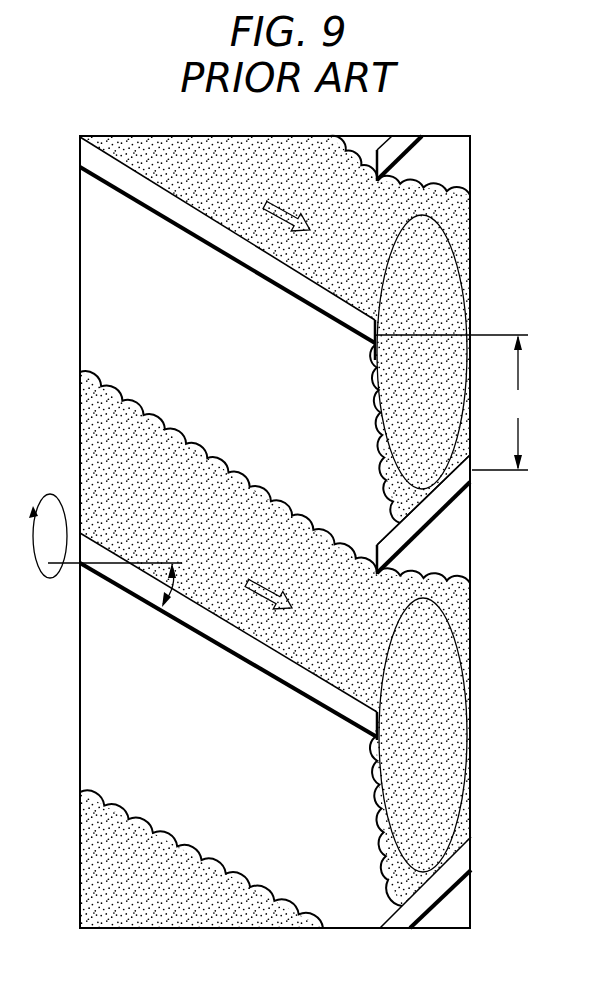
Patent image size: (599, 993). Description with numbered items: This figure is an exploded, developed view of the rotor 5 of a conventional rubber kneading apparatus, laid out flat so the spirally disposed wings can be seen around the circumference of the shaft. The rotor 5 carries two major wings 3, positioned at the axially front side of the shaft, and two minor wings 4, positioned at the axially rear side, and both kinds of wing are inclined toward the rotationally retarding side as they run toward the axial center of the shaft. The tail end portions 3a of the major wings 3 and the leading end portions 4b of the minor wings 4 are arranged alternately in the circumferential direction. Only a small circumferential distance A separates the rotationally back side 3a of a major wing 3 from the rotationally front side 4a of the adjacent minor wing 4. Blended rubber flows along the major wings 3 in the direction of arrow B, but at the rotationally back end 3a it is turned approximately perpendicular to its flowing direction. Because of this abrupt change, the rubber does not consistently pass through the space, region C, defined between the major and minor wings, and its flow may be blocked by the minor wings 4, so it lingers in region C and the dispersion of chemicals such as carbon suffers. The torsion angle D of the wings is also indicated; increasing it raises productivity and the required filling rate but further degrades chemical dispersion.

The major wing 3 is at (233, 250).
The tail end portion of the major wing 3a is at (378, 341).
The minor wing 4 is at (438, 500).
The rotationally front side of the minor wing 4a is at (472, 478).
The leading end portion of the minor wing 4b is at (376, 560).
The rotor 5 is at (470, 232).
The circumferential distance A is at (453, 402).
The arrow showing flow direction B is at (267, 398).
The region C is at (372, 378).
The torsion angle D is at (111, 550).